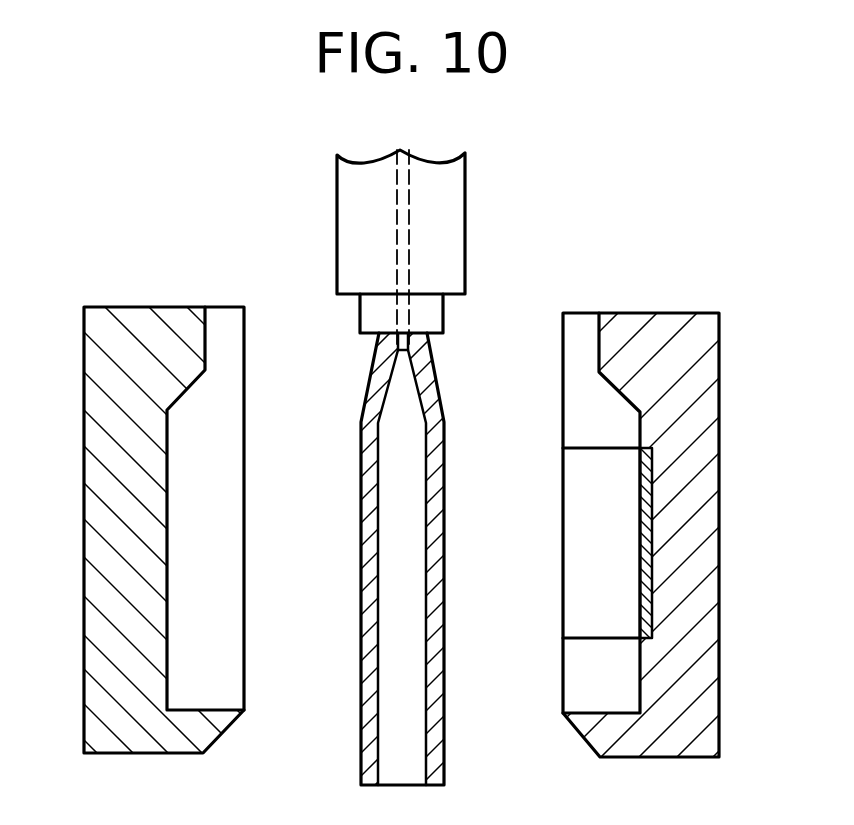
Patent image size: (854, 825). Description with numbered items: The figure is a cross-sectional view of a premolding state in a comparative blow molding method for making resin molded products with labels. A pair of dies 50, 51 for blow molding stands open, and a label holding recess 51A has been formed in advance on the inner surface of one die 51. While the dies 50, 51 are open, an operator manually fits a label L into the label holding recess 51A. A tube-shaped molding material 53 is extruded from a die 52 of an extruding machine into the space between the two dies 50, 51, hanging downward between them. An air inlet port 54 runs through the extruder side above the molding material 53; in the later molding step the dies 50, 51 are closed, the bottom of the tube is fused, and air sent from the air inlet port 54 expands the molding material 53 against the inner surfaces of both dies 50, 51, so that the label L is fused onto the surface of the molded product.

The die 50 is at (130, 308).
The die 51 is at (672, 312).
The label holding recess 51A is at (652, 563).
The label L is at (653, 488).
The die of an extruding machine 52 is at (435, 313).
The tube-shaped molding material 53 is at (445, 550).
The air inlet port 54 is at (409, 222).